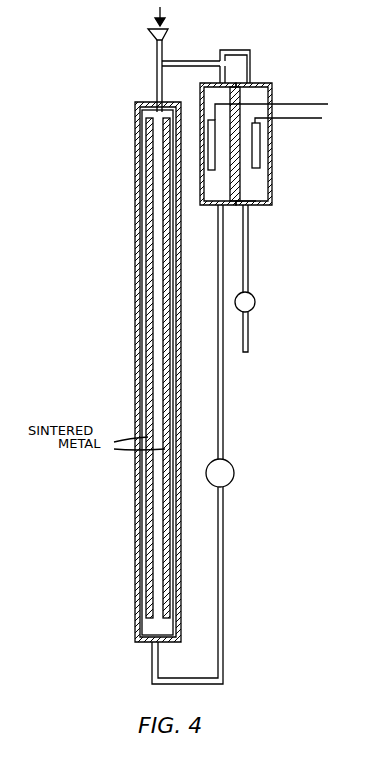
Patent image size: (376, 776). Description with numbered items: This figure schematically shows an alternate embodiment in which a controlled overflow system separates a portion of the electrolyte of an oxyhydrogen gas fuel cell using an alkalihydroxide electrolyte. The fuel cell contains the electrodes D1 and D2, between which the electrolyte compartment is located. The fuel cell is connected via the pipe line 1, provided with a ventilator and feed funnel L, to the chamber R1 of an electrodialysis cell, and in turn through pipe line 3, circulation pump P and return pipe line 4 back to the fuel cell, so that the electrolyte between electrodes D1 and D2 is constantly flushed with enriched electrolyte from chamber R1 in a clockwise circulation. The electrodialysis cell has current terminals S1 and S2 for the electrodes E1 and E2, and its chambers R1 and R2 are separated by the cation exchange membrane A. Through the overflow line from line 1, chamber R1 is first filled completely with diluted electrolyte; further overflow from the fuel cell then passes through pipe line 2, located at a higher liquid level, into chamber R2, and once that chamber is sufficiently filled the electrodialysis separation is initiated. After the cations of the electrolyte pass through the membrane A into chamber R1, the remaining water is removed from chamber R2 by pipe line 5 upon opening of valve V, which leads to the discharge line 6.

The feed funnel L is at (152, 36).
The pipe line 1 is at (157, 73).
The pipe line 2 is at (243, 51).
The chamber R1 is at (204, 90).
The chamber R2 is at (262, 92).
The electrode E1 is at (210, 170).
The electrode E2 is at (260, 159).
The current terminal S1 is at (328, 104).
The current terminal S2 is at (322, 118).
The cation exchange membrane A is at (238, 194).
The pipe line 3 is at (218, 252).
The return pipe line 4 is at (218, 626).
The pipe line 5 is at (254, 250).
The valve V is at (254, 300).
The discharge line 6 is at (256, 333).
The circulation pump P is at (231, 465).
The electrode D1 is at (147, 382).
The electrode D2 is at (172, 382).